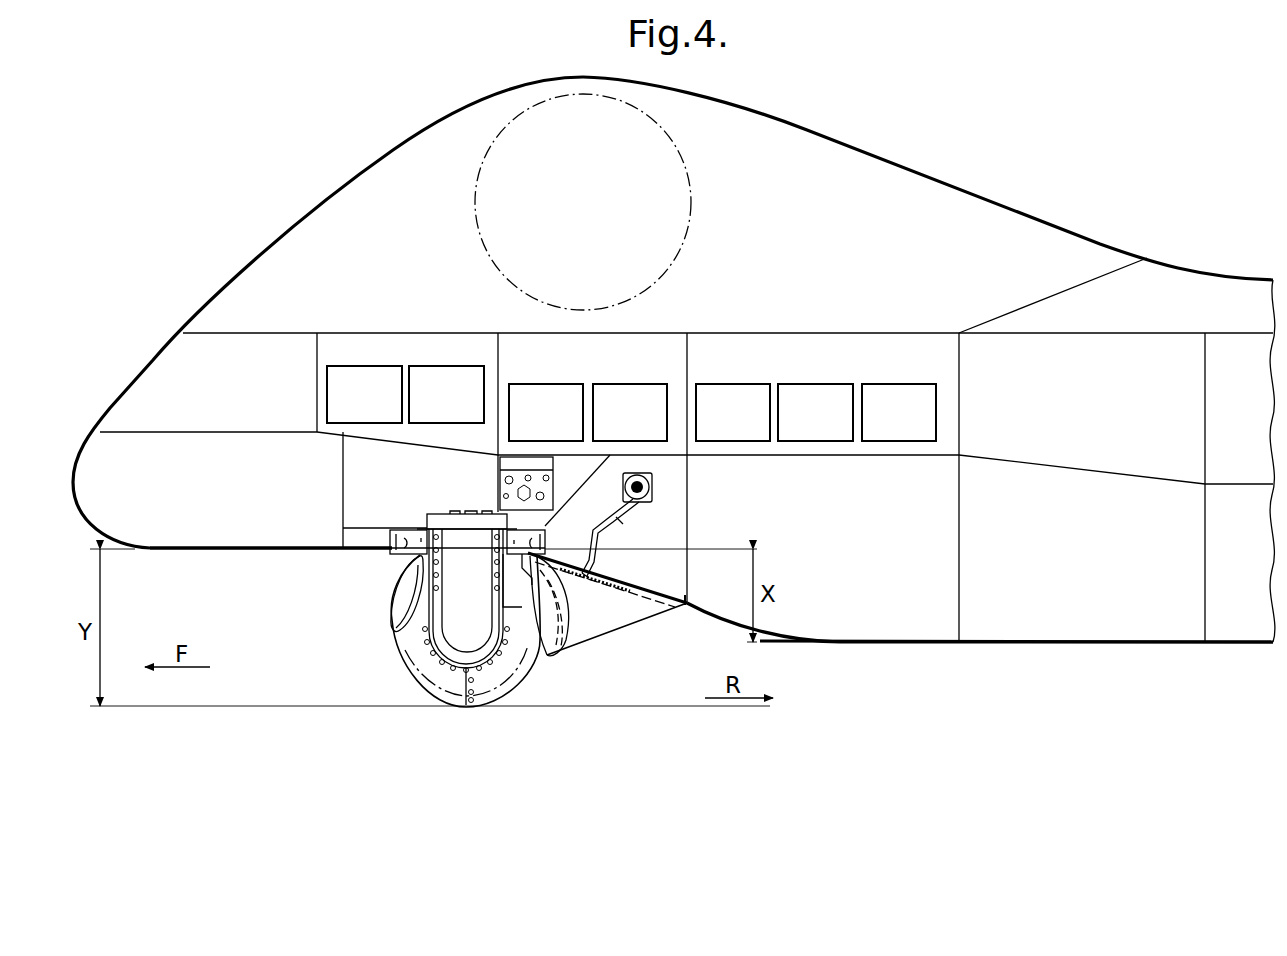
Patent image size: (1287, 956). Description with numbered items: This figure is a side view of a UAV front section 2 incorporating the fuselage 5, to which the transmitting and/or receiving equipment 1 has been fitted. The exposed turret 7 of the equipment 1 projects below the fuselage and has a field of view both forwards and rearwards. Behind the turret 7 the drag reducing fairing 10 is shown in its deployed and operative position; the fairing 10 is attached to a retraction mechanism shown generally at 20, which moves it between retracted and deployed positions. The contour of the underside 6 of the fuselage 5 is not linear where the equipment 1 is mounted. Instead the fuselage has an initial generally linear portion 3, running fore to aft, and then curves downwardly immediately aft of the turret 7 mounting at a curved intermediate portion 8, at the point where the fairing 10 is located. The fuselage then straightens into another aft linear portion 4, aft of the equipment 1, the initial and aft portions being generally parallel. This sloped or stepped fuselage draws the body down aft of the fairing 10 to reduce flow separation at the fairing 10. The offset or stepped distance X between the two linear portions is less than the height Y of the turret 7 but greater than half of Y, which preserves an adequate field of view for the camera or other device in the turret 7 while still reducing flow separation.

The transmitting and/or receiving equipment 1 is at (347, 608).
The UAV front section 2 is at (325, 203).
The initial linear portion 3 is at (187, 551).
The aft linear portion 4 is at (885, 643).
The fuselage 5 is at (177, 298).
The underside 6 is at (372, 552).
The turret 7 is at (420, 655).
The curved intermediate portion 8 is at (648, 597).
The fairing 10 is at (580, 622).
The retraction mechanism 20 is at (645, 518).